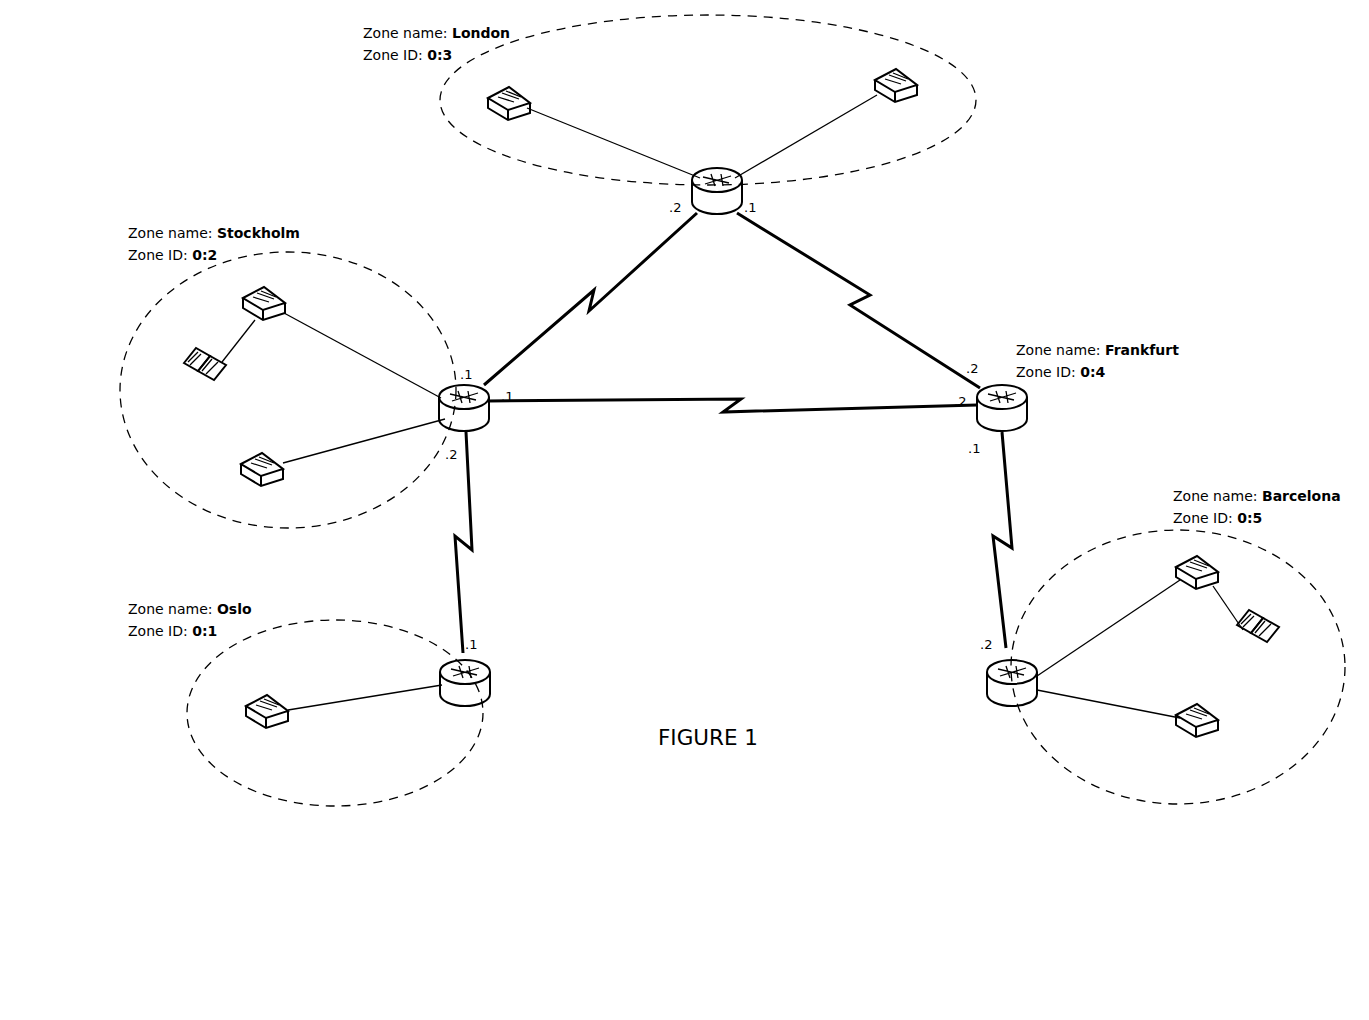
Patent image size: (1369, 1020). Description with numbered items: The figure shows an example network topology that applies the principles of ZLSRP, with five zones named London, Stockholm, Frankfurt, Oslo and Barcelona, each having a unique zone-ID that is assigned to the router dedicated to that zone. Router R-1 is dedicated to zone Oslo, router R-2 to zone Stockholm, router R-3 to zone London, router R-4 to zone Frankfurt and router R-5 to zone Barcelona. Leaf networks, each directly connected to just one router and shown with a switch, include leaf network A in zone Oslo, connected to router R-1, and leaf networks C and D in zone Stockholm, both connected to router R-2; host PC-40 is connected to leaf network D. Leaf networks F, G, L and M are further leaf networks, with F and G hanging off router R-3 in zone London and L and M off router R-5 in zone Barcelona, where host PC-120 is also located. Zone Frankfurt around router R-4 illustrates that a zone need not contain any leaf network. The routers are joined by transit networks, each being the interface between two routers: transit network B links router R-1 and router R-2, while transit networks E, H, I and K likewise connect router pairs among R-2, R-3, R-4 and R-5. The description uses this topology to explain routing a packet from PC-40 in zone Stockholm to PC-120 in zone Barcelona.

The router R-1 is at (483, 683).
The router R-2 is at (478, 414).
The router R-3 is at (717, 207).
The router R-4 is at (1009, 423).
The router R-5 is at (996, 683).
The leaf network A is at (344, 714).
The transit network B is at (507, 542).
The leaf network C is at (343, 452).
The leaf network D is at (342, 342).
The transit network E is at (590, 299).
The leaf network F is at (594, 122).
The leaf network G is at (826, 122).
The transit network H is at (858, 300).
The transit network I is at (732, 382).
The transit network K is at (948, 540).
The leaf network L is at (1127, 616).
The leaf network M is at (1127, 724).
The host PC-40 is at (206, 373).
The host PC-120 is at (1264, 639).